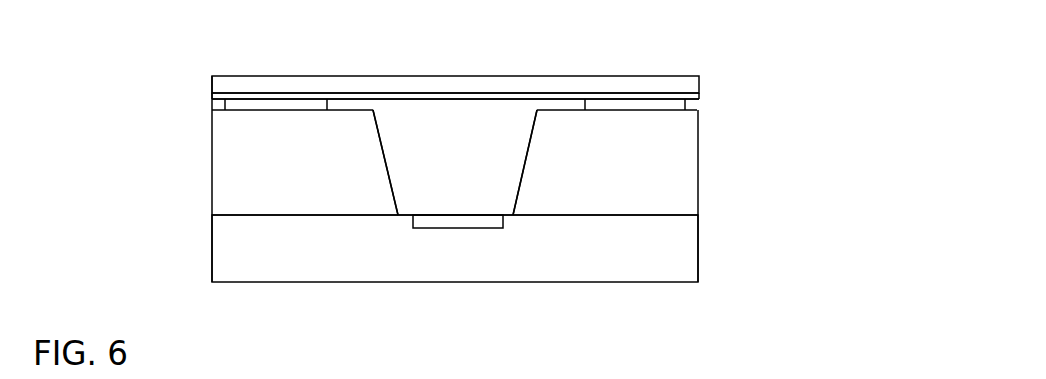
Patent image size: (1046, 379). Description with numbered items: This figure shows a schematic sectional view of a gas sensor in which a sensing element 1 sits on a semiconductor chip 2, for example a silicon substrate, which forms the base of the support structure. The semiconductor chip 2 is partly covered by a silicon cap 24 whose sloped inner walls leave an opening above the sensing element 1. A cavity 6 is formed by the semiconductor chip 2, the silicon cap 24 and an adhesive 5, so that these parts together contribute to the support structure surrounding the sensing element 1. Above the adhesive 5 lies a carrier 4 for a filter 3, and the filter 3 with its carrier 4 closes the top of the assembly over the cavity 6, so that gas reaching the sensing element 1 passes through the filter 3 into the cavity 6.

The sensing element 1 is at (462, 223).
The semiconductor chip 2 is at (635, 253).
The filter 3 is at (385, 93).
The carrier 4 is at (518, 92).
The adhesive 5 is at (685, 110).
The cavity 6 is at (455, 162).
The silicon cap 24 is at (455, 179).